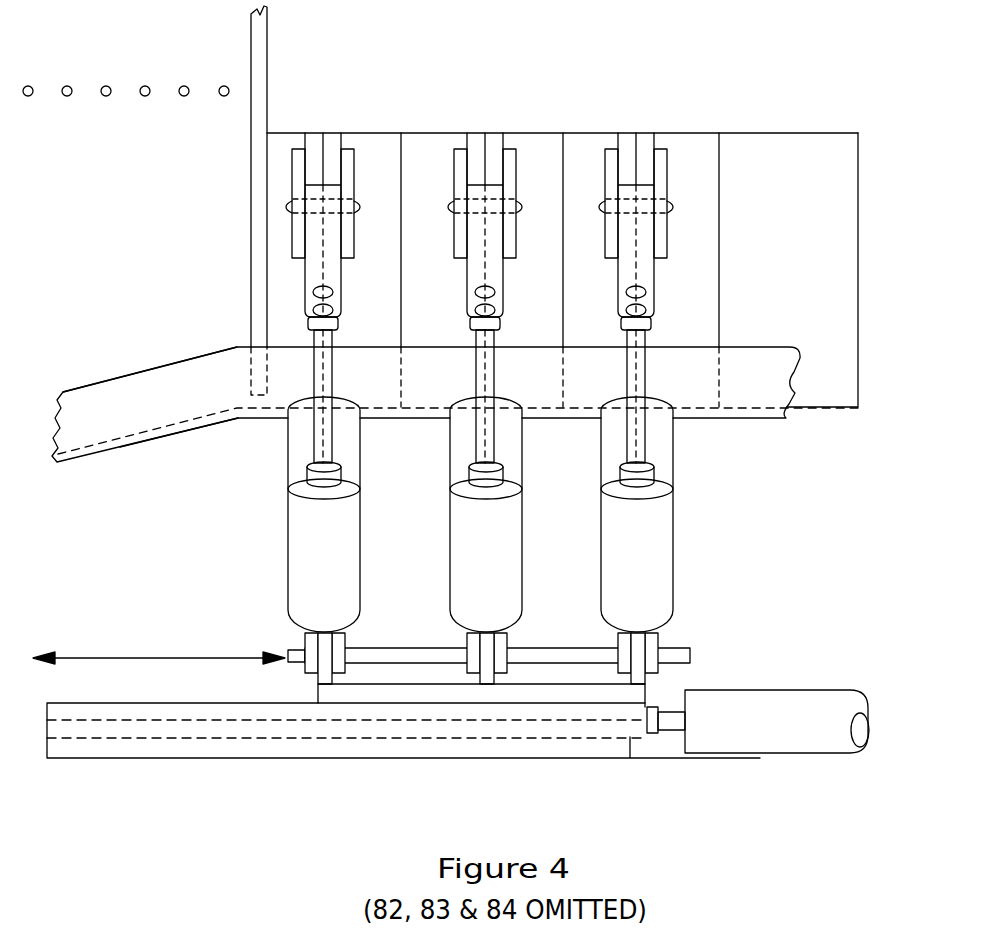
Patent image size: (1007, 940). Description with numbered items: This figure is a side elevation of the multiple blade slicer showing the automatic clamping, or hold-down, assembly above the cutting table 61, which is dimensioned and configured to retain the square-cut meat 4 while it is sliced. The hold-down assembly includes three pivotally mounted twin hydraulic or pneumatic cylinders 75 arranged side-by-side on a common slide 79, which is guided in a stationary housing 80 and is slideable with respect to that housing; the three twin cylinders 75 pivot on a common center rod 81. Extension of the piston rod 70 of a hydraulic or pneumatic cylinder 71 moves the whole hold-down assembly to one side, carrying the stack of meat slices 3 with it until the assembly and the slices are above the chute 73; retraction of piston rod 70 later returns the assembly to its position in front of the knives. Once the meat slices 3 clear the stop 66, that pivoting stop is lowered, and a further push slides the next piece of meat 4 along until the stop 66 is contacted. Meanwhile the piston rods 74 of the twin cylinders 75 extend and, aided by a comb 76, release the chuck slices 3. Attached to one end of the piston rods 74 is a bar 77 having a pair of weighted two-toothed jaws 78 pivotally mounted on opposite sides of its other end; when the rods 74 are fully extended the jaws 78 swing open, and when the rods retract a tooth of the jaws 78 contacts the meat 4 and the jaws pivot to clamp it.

The meat slices 3 is at (280, 133).
The square-cut meat 4 is at (757, 132).
The cutting table 61 is at (759, 347).
The stop 66 is at (251, 177).
The piston rod 70 is at (663, 712).
The hydraulic or pneumatic cylinder 71 is at (797, 690).
The chute 73 is at (130, 437).
The piston rods 74 is at (647, 367).
The twin hydraulic or pneumatic cylinder 75 is at (361, 535).
The comb 76 is at (105, 97).
The bar 77 is at (487, 186).
The two-toothed jaws 78 is at (342, 149).
The common slide 79 is at (395, 683).
The stationary housing 80 is at (220, 702).
The common center rod 81 is at (582, 648).